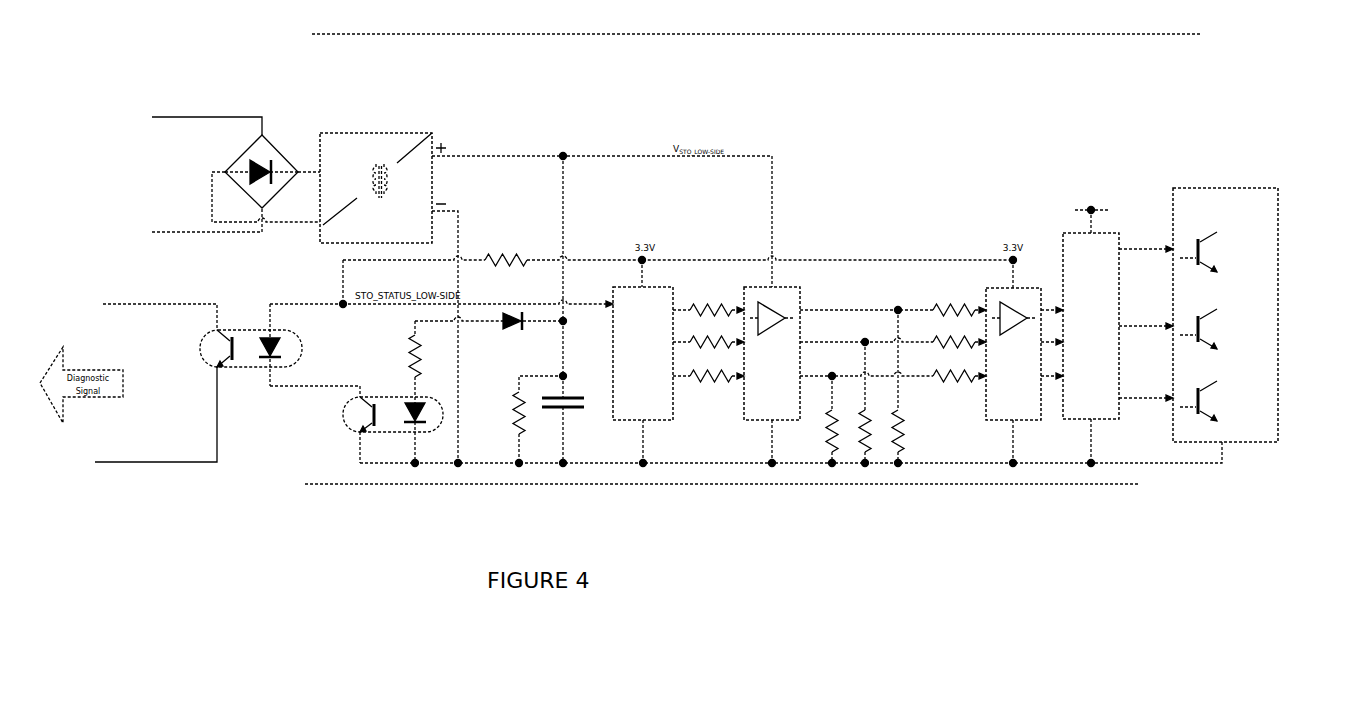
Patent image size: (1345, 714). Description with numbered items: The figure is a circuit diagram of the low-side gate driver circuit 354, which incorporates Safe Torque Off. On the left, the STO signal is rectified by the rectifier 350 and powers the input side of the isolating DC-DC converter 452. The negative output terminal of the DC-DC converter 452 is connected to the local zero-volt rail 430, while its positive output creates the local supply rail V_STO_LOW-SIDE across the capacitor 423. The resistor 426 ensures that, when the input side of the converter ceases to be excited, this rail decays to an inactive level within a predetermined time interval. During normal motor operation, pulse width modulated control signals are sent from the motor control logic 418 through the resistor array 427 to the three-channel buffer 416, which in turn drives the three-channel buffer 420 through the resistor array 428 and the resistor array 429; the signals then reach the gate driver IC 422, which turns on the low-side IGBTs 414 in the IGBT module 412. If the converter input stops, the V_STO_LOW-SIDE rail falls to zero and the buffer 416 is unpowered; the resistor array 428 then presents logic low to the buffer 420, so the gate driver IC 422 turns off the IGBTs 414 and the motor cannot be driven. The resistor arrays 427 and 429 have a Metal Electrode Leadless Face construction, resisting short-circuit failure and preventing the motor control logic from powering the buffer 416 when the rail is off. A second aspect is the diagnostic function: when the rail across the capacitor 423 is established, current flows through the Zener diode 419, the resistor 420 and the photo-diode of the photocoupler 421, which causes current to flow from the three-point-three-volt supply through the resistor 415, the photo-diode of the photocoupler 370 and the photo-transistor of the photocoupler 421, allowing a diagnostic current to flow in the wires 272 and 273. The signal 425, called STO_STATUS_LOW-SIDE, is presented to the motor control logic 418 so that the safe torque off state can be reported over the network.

The low-side gate driver circuit 354 is at (752, 259).
The rectifier 350 is at (238, 148).
The isolating DC-DC converter 452 is at (380, 131).
The resistor 415 is at (497, 252).
The wire 272 is at (153, 303).
The wire 273 is at (153, 460).
The photocoupler 370 is at (254, 328).
The STO_STATUS_LOW-SIDE signal 425 is at (323, 303).
The photocoupler 421 is at (380, 435).
The resistor / three-channel buffer 420 is at (402, 344).
The Zener diode 419 is at (505, 342).
The resistor 426 is at (508, 434).
The capacitor 423 is at (573, 415).
The local 0V rail 430 is at (709, 462).
The motor control logic 418 is at (643, 375).
The resistor array 427 is at (735, 392).
The three-channel buffer 416 is at (772, 375).
The resistor array 428 is at (905, 472).
The resistor array 429 is at (975, 392).
The gate driver IC 422 is at (1091, 328).
The IGBT module 412 is at (1211, 186).
The low-side IGBTs 414 is at (1218, 248).